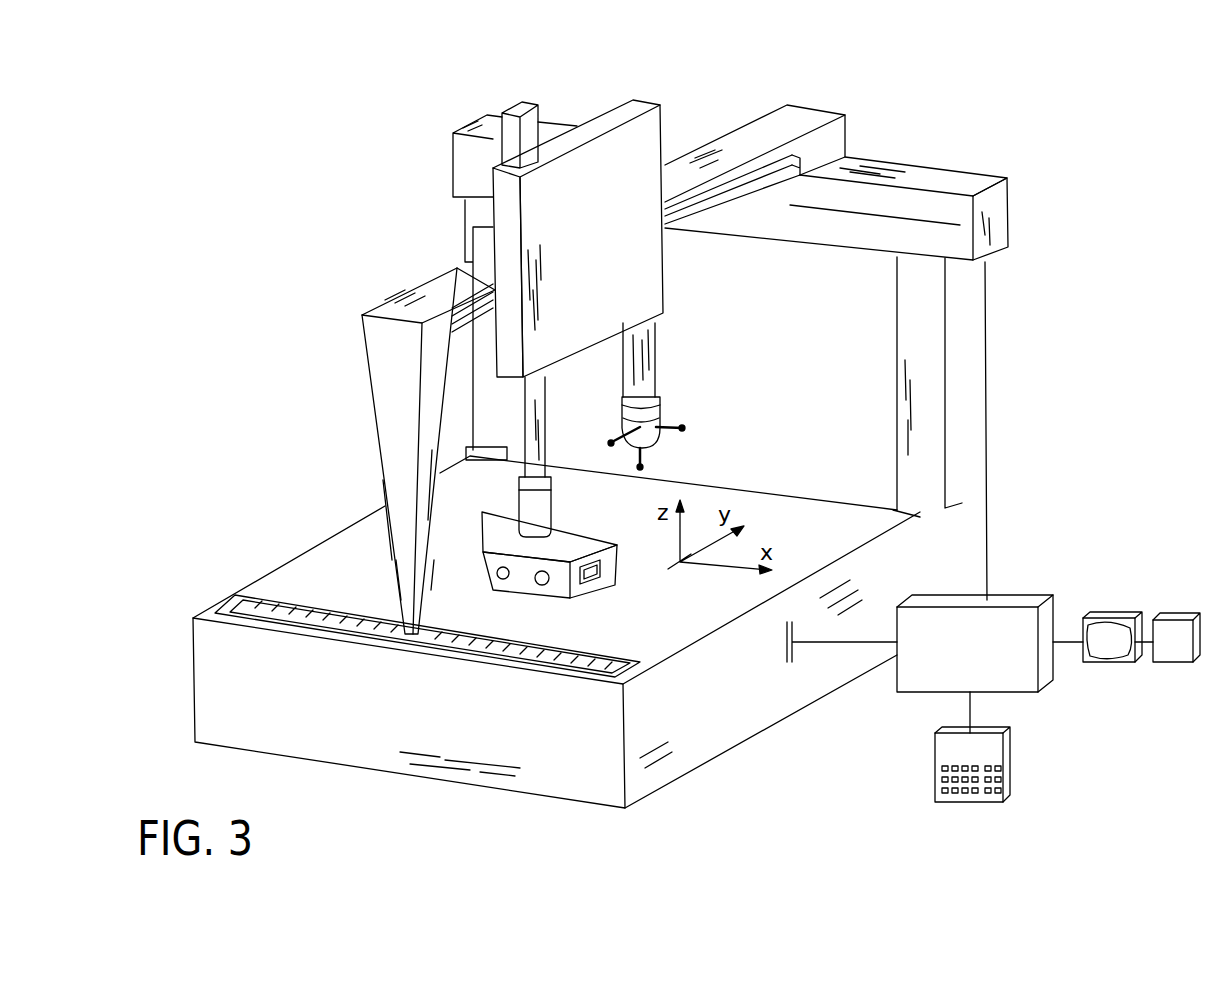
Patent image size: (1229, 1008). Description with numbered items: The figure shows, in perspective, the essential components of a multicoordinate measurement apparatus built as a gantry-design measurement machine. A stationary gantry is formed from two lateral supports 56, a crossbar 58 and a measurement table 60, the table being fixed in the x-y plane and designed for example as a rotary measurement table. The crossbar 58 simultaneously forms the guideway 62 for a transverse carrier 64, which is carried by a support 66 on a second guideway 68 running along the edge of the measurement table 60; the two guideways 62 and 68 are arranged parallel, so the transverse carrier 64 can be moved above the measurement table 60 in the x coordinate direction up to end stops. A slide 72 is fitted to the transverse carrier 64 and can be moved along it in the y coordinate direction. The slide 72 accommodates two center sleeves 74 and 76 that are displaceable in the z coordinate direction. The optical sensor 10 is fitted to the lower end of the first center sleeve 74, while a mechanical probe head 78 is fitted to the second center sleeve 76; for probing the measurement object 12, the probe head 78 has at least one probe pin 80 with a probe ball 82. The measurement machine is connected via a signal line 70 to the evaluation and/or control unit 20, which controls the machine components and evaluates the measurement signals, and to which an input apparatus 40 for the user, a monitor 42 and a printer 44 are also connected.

The optical sensor 10 is at (545, 503).
The measurement object 12 is at (560, 585).
The evaluation and/or control unit 20 is at (1005, 625).
The input apparatus 40 is at (1010, 777).
The monitor 42 is at (1108, 664).
The printer 44 is at (1170, 632).
The lateral supports 56 is at (474, 220).
The crossbar 58 is at (810, 224).
The measurement table 60 is at (716, 618).
The guideway 62 is at (852, 172).
The transverse carrier 64 is at (727, 160).
The support 66 is at (390, 472).
The second guideway 68 is at (545, 668).
The signal line 70 is at (846, 645).
The slide 72 is at (650, 280).
The first center sleeve 74 is at (536, 405).
The second center sleeve 76 is at (645, 358).
The mechanical probe head 78 is at (660, 412).
The probe pin 80 is at (630, 436).
The probe ball 82 is at (645, 466).